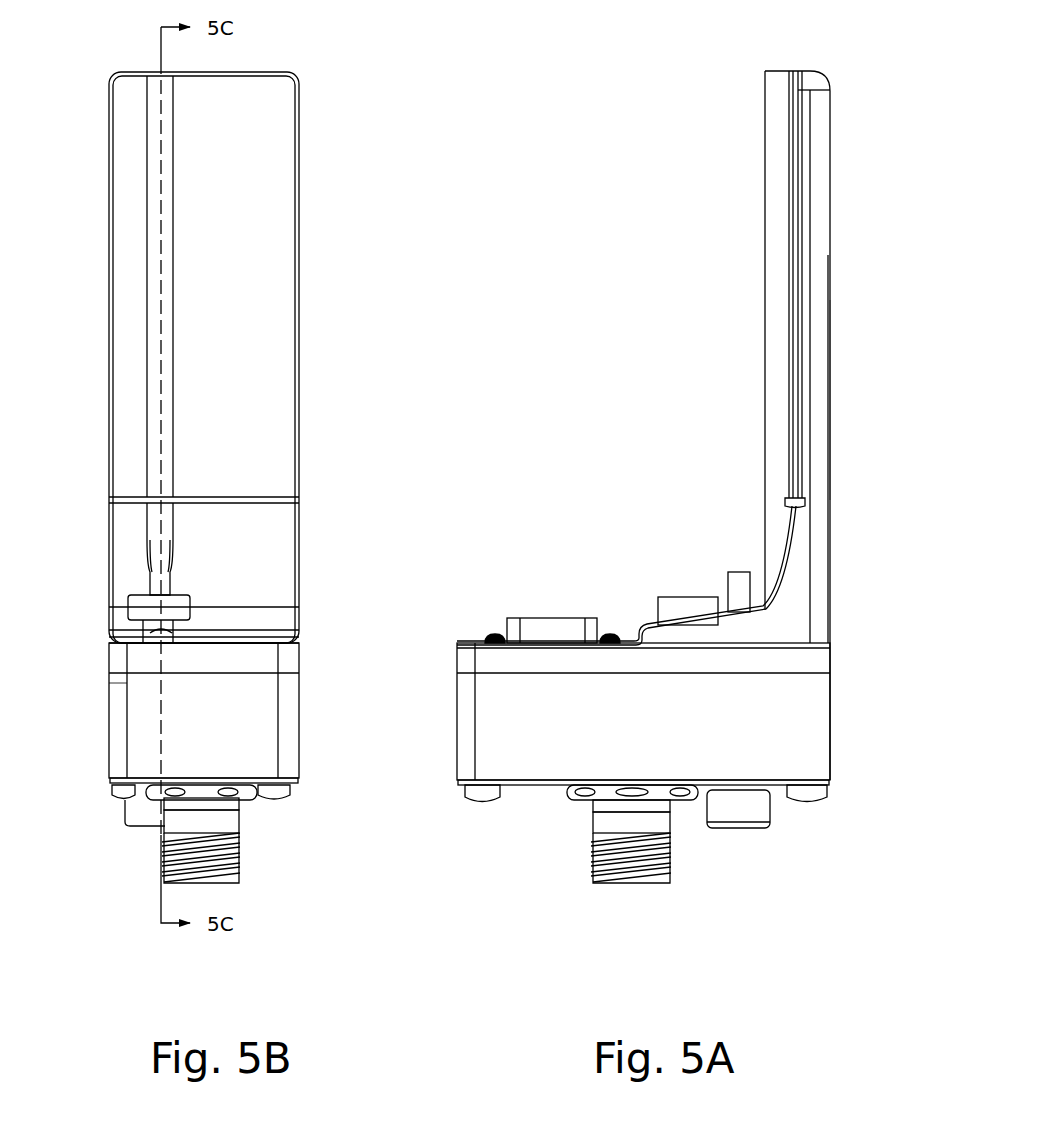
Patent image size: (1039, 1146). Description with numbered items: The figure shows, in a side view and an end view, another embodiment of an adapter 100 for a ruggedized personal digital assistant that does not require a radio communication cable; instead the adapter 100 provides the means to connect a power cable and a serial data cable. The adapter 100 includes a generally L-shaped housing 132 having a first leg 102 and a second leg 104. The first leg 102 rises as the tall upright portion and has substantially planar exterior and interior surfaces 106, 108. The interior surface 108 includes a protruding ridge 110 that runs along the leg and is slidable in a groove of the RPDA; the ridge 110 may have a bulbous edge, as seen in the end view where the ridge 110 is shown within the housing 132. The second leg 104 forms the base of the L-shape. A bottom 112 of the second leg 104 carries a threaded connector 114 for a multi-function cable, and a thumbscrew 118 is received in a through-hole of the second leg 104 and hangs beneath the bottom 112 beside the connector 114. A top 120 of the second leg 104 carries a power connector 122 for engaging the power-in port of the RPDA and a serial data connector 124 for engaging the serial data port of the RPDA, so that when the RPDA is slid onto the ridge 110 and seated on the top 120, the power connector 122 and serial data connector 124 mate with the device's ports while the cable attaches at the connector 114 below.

In FIG. 5A, the adapter 100 is at (628, 117).
In FIG. 5A, the first leg 102 is at (773, 273).
In FIG. 5B, the second leg 104 is at (490, 745).
In FIG. 5A, the second leg 104 is at (643, 714).
In FIG. 5A, the exterior surface 106 is at (823, 352).
In FIG. 5B, the interior surface 108 is at (268, 112).
In FIG. 5B, the ridge 110 is at (161, 206).
In FIG. 5A, the ridge 110 is at (765, 457).
In FIG. 5A, the bottom 112 is at (527, 785).
In FIG. 5B, the connector 114 is at (248, 858).
In FIG. 5A, the connector 114 is at (632, 883).
In FIG. 5A, the thumbscrew 118 is at (737, 828).
In FIG. 5A, the top 120 is at (483, 640).
In FIG. 5A, the power connector 122 is at (668, 597).
In FIG. 5A, the serial data connector 124 is at (560, 615).
In FIG. 5B, the housing 132 is at (120, 682).
In FIG. 5A, the housing 132 is at (780, 648).